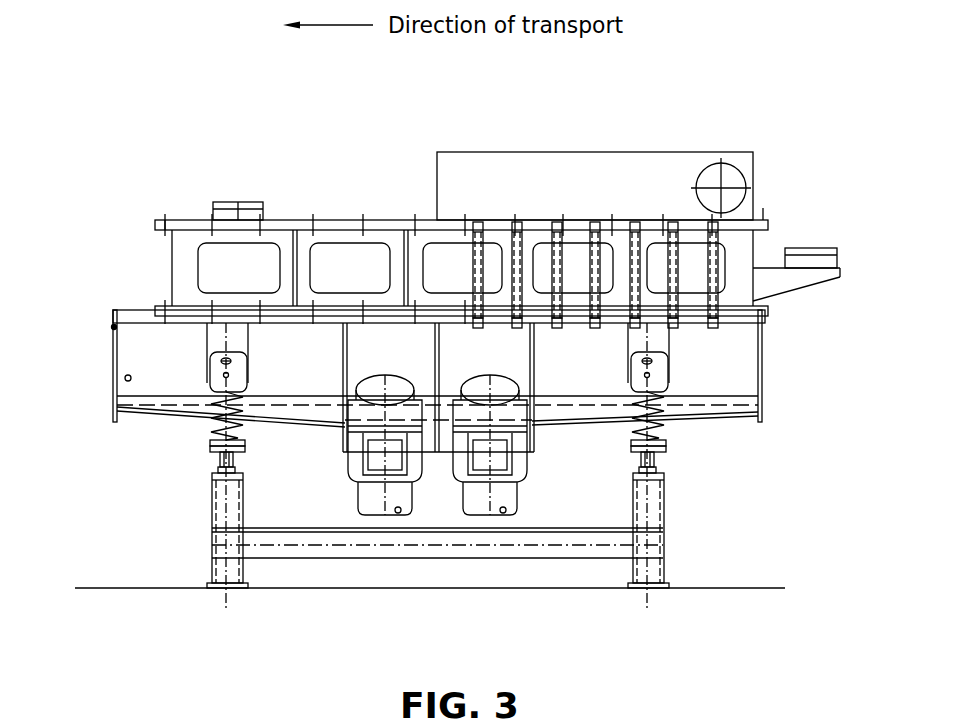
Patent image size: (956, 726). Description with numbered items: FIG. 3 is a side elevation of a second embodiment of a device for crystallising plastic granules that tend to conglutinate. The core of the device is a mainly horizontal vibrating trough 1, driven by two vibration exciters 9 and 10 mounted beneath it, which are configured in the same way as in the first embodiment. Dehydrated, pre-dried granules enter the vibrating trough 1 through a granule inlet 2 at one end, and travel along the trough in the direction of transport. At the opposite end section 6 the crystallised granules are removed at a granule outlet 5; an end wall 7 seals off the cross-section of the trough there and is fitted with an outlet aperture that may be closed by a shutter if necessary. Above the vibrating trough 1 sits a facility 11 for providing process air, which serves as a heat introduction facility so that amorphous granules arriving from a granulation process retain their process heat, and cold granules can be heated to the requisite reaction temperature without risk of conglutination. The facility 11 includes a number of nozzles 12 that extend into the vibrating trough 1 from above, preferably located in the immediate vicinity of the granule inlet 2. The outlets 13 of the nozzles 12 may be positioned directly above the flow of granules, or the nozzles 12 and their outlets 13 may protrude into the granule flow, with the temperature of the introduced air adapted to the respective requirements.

The vibrating trough 1 is at (286, 238).
The granule inlet 2 is at (798, 272).
The granule outlet 5 is at (113, 365).
The end section 6 is at (126, 380).
The end wall 7 is at (113, 327).
The vibration exciter 9 is at (397, 514).
The vibration exciter 10 is at (503, 514).
The facility for providing process air 11 is at (575, 159).
The nozzles 12 is at (483, 250).
The outlets 13 is at (595, 330).